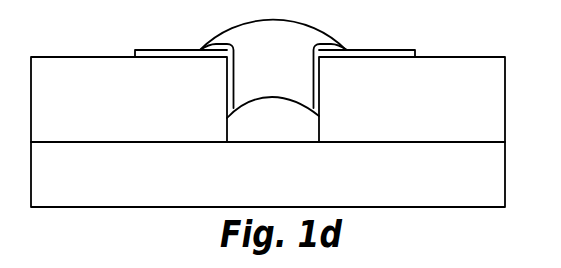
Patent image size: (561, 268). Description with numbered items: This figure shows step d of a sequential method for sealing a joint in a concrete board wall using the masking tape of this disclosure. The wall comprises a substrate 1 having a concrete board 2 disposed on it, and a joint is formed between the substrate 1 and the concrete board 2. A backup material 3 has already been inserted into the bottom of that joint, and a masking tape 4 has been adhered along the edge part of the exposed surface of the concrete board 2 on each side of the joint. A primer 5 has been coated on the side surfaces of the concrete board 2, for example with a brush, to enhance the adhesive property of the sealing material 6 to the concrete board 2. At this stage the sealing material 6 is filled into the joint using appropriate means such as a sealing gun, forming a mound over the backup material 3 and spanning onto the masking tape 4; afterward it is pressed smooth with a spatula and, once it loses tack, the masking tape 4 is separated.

The substrate 1 is at (505, 180).
The concrete board 2 is at (31, 110).
The backup material 3 is at (266, 96).
The masking tape 4 is at (173, 50).
The primer 5 is at (242, 62).
The sealing material 6 is at (308, 29).